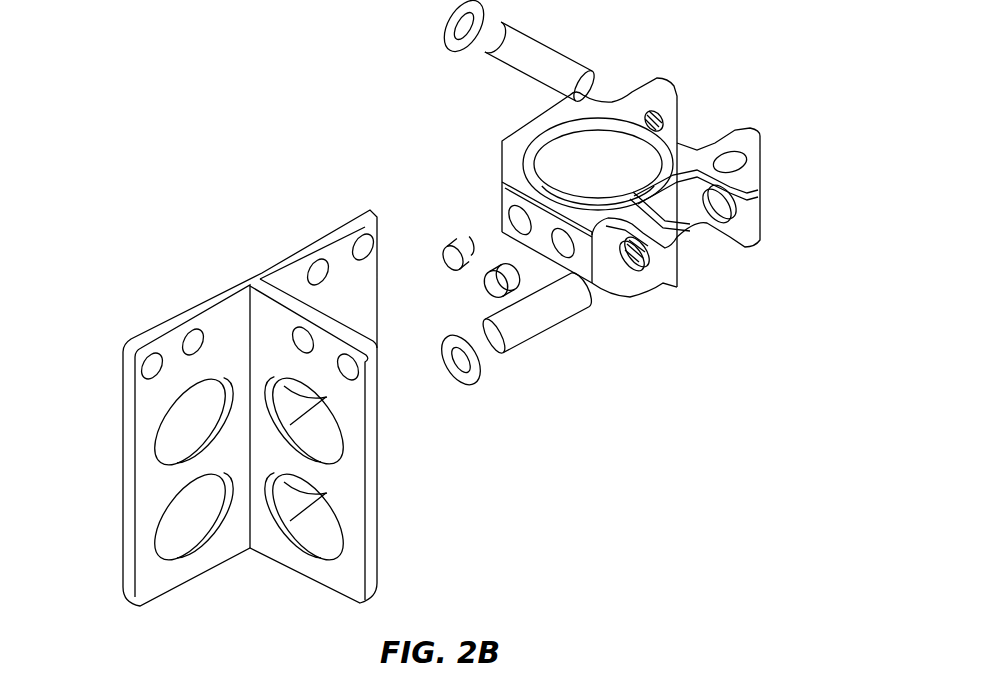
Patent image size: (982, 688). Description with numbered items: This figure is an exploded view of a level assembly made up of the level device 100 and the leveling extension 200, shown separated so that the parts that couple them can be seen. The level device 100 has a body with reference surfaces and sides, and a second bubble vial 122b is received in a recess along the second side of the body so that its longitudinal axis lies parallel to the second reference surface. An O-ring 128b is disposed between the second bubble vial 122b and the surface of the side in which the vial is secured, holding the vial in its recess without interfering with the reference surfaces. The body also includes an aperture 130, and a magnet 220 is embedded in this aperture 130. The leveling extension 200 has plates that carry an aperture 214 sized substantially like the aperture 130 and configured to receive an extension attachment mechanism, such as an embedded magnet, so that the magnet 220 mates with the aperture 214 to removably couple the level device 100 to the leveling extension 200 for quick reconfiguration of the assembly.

The level device 100 is at (657, 92).
The second bubble vial 122b is at (523, 327).
The O-ring 128b is at (475, 368).
The aperture 130 is at (521, 221).
The leveling extension 200 is at (152, 400).
The aperture 214 is at (305, 342).
The magnet 220 is at (455, 247).